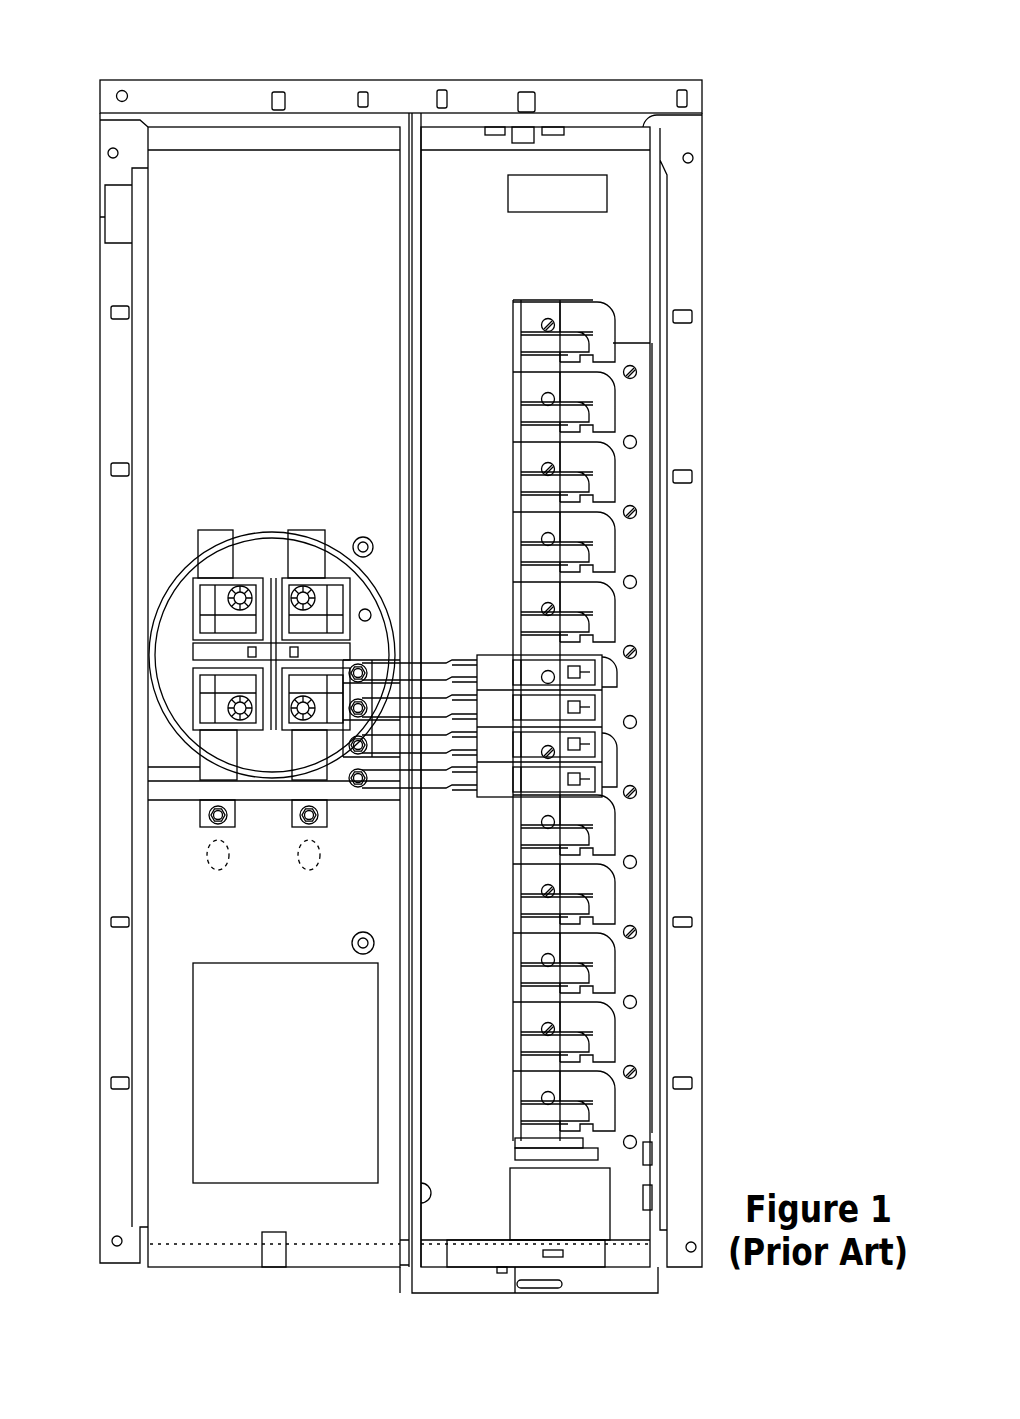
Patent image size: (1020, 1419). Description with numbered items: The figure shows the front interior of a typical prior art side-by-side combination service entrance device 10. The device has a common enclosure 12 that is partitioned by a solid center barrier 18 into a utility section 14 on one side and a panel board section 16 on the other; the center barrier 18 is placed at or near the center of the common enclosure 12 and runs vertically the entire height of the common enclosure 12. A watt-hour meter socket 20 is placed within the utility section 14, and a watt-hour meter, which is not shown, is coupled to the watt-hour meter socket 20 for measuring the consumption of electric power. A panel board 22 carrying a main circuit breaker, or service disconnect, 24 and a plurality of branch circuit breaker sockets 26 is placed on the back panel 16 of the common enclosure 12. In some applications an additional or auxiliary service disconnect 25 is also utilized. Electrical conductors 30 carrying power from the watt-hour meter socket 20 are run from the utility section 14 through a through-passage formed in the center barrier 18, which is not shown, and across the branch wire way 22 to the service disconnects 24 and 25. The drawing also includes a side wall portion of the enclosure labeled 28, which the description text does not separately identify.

The combination service entrance device 10 is at (731, 30).
The common enclosure 12 is at (148, 370).
The utility section 14 is at (285, 283).
The panel board section 16 is at (522, 255).
The center barrier 18 is at (413, 1028).
The watt-hour meter socket 20 is at (190, 599).
The panel board 22 is at (619, 699).
The main circuit breaker 24 is at (593, 705).
The service disconnect 25 is at (550, 300).
The branch circuit breaker sockets 26 is at (571, 427).
The enclosure right side wall 28 is at (635, 210).
The electrical conductors 30 is at (427, 792).